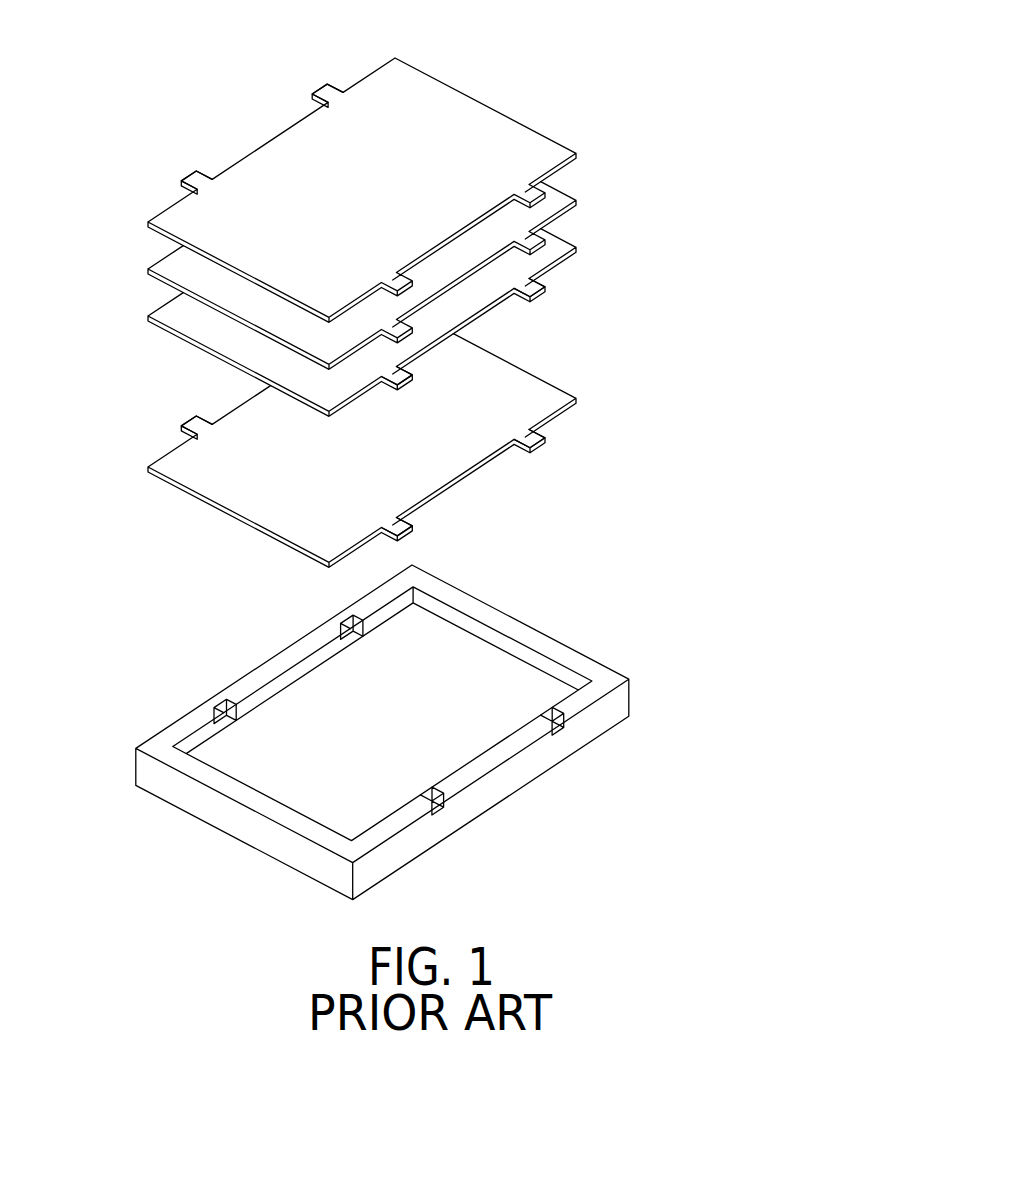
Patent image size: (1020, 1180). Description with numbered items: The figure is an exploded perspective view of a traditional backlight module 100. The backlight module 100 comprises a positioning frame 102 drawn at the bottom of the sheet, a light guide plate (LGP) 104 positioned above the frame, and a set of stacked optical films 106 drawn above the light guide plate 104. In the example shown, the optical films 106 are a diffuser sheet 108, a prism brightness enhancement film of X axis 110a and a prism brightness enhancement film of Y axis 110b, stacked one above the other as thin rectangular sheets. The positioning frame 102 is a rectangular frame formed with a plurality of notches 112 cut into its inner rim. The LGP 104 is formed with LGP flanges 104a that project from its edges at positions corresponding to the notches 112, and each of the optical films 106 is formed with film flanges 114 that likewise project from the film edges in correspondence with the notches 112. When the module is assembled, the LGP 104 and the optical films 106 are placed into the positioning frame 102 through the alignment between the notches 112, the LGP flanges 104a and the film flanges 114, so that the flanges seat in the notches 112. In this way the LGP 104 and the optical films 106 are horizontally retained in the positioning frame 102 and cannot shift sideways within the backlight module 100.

The backlight module 100 is at (720, 56).
The positioning frame 102 is at (520, 772).
The light guide plate 104 is at (578, 398).
The LGP flanges 104a is at (187, 428).
The optical films 106 is at (473, 237).
The diffuser sheet 108 is at (433, 323).
The prism brightness enhancement film of X axis 110a is at (578, 153).
The prism brightness enhancement film of Y axis 110b is at (578, 200).
The notches 112 is at (214, 703).
The film flanges 114 is at (324, 85).